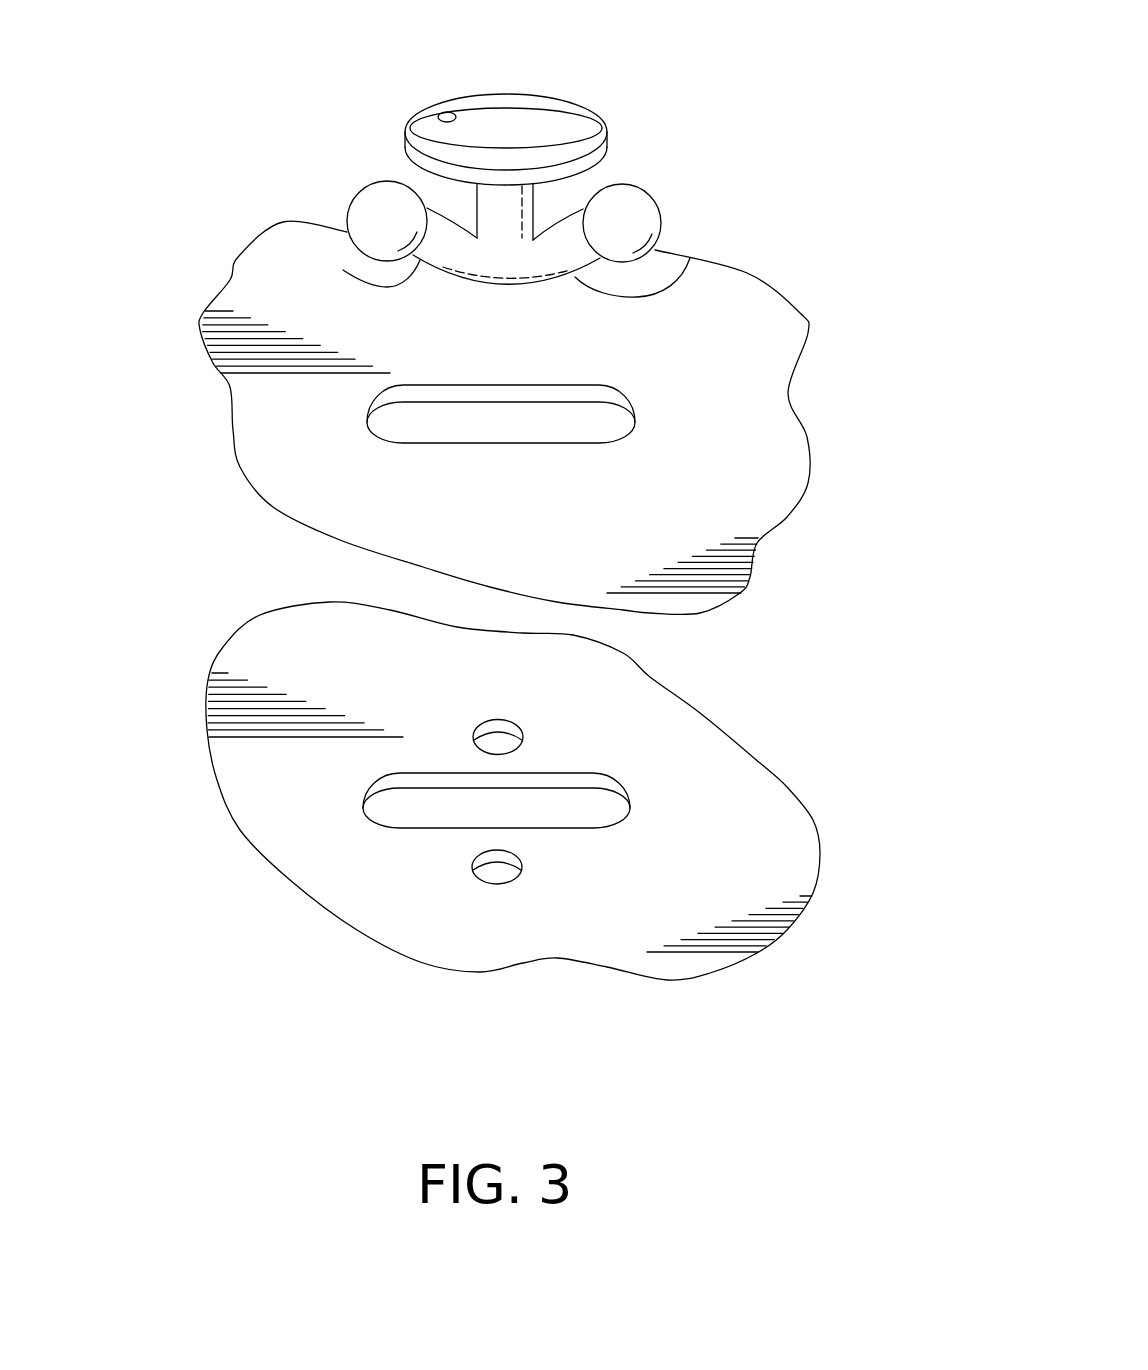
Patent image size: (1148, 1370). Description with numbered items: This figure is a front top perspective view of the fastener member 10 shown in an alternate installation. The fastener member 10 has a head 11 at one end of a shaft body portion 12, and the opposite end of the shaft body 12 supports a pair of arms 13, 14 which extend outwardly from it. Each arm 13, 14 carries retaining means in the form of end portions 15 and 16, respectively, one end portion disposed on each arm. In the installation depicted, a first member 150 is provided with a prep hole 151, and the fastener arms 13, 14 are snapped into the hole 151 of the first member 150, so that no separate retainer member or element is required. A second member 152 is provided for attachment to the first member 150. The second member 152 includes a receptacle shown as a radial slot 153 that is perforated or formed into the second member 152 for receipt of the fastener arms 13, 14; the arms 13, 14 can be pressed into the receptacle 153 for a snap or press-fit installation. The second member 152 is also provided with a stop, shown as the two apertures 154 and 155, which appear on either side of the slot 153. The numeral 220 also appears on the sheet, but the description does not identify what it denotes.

The fastener member 10 is at (550, 72).
The head 11 is at (482, 100).
The shaft body portion 12 is at (493, 205).
The arm 13 is at (440, 112).
The arm 14 is at (640, 298).
The end portion 15 is at (358, 195).
The end portion 16 is at (637, 207).
The first member 150 is at (747, 340).
The prep hole 151 is at (625, 435).
The second member 152 is at (665, 747).
The radial slot 153 is at (633, 802).
The aperture 154 is at (500, 884).
The aperture 155 is at (523, 736).
The strap 220 is at (171, 115).